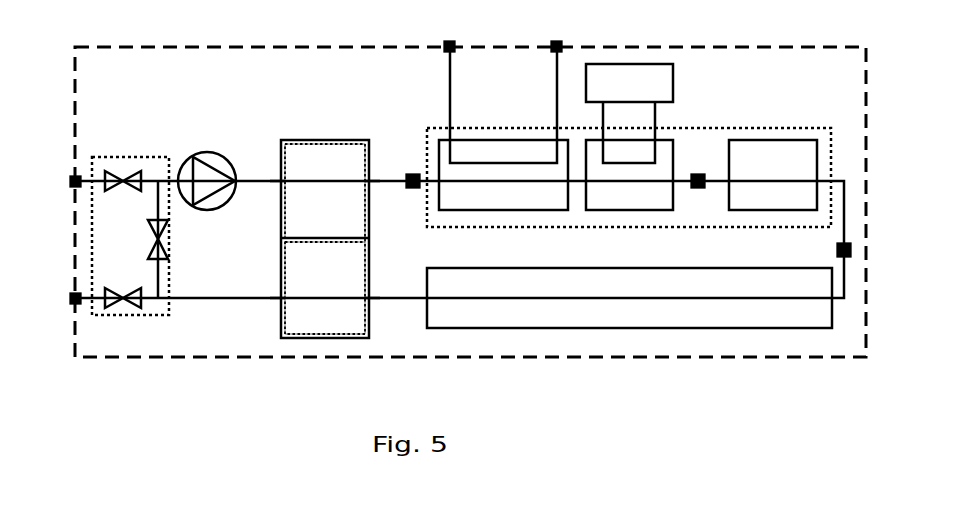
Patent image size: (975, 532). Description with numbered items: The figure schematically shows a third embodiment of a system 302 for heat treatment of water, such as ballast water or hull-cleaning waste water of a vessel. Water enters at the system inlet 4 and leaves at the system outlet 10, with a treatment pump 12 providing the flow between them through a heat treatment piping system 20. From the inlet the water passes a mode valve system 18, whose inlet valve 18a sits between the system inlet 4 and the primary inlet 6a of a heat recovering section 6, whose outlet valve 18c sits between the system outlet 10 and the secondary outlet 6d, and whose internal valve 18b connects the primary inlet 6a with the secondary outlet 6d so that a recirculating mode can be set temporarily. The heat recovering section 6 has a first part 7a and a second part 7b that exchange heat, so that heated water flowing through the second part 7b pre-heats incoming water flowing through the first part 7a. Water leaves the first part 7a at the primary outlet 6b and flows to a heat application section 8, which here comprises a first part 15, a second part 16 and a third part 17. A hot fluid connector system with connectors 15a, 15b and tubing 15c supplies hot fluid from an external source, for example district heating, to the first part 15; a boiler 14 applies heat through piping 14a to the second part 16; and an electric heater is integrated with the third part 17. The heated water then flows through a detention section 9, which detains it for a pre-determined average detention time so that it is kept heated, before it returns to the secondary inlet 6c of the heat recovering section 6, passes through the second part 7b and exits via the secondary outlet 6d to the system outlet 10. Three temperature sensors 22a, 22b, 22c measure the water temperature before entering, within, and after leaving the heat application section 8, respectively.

The system for heat treatment of water 302 is at (128, 47).
The system inlet 4 is at (72, 178).
The system outlet 10 is at (72, 295).
The treatment pump 12 is at (205, 152).
The heat recovering section 6 is at (320, 140).
The primary inlet 6a is at (281, 188).
The primary outlet 6b is at (370, 179).
The secondary inlet 6c is at (370, 297).
The secondary outlet 6d is at (281, 297).
The first part of the heat recovering section 7a is at (366, 207).
The second part of the heat recovering section 7b is at (366, 277).
The heat application section 8 is at (485, 228).
The detention section 9 is at (680, 329).
The boiler 14 is at (629, 83).
The tubing 14a is at (656, 118).
The first part of the heat application section 15 is at (528, 139).
The connector 15a is at (447, 45).
The connector 15b is at (561, 45).
The tubing 15c is at (449, 110).
The second part of the heat application section 16 is at (595, 211).
The third part of the heat application section 17 is at (773, 139).
The mode valve system 18 is at (163, 318).
The inlet valve 18a is at (113, 171).
The internal valve 18b is at (165, 232).
The outlet valve 18c is at (133, 308).
The heat treatment piping system 20 is at (252, 299).
The temperature sensor 22a is at (412, 175).
The temperature sensor 22b is at (698, 190).
The temperature sensor 22c is at (849, 257).